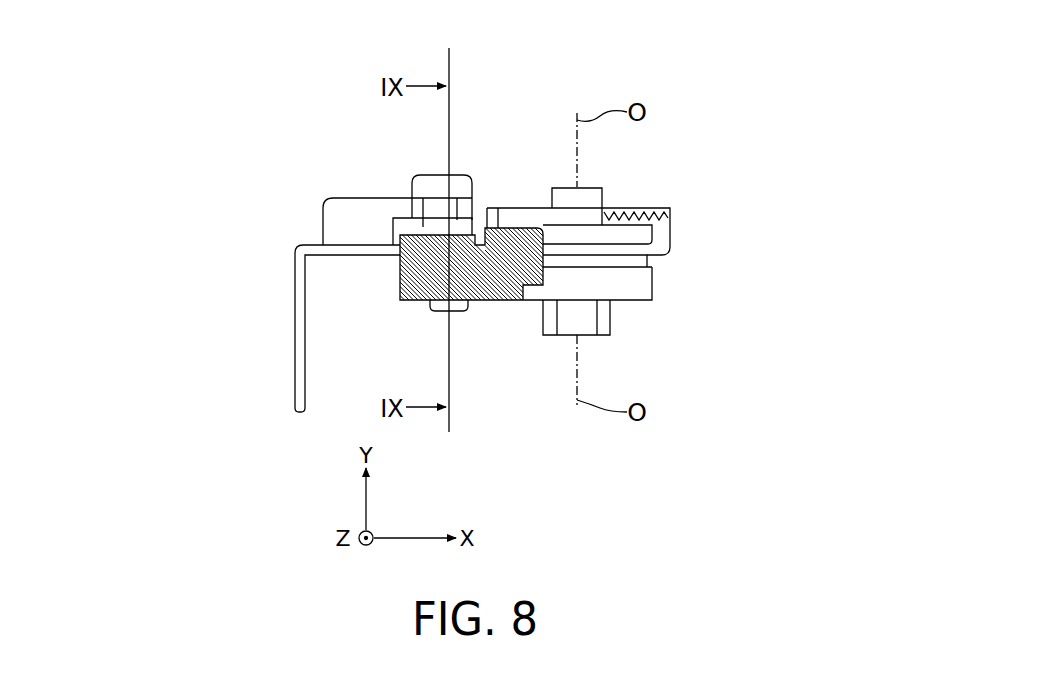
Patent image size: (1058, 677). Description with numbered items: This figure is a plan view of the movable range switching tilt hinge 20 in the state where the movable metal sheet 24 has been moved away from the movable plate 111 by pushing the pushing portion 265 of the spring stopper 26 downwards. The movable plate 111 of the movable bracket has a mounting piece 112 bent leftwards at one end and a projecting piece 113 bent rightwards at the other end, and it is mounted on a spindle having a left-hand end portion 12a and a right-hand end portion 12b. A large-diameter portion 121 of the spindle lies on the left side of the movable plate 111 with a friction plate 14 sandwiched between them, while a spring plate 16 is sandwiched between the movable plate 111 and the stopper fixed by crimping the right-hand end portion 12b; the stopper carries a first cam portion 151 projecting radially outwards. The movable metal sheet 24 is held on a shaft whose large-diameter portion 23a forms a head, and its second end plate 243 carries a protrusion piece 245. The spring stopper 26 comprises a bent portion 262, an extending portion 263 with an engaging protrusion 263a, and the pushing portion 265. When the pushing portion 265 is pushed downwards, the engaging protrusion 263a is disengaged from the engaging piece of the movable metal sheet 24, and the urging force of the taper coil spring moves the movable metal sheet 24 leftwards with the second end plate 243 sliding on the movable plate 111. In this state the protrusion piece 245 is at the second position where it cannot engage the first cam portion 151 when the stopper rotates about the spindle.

The tilt hinge 20 is at (572, 82).
The spring stopper 26 is at (342, 213).
The bent portion 262 is at (327, 210).
The movable plate 111 is at (300, 247).
The mounting piece 112 is at (294, 337).
The extending portion 263 is at (476, 185).
The engaging protrusion 263a is at (423, 222).
The pushing portion 265 is at (458, 205).
The movable metal sheet 24 is at (405, 218).
The second end plate 243 is at (398, 282).
The protrusion piece 245 is at (512, 228).
The large-diameter portion 23a is at (437, 311).
The right-hand end portion 12b is at (587, 195).
The projecting piece 113 is at (666, 240).
The first cam portion 151 is at (640, 208).
The spring plate 16 is at (613, 235).
The friction plate 14 is at (643, 258).
The large-diameter portion 121 is at (635, 290).
The left-hand end portion 12a is at (573, 338).